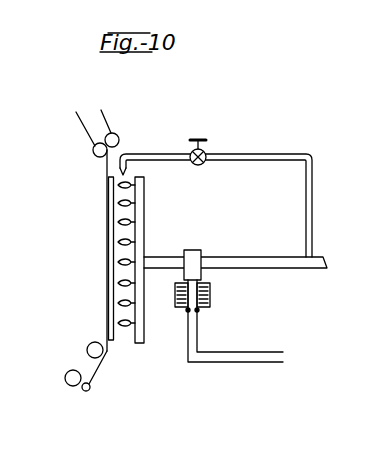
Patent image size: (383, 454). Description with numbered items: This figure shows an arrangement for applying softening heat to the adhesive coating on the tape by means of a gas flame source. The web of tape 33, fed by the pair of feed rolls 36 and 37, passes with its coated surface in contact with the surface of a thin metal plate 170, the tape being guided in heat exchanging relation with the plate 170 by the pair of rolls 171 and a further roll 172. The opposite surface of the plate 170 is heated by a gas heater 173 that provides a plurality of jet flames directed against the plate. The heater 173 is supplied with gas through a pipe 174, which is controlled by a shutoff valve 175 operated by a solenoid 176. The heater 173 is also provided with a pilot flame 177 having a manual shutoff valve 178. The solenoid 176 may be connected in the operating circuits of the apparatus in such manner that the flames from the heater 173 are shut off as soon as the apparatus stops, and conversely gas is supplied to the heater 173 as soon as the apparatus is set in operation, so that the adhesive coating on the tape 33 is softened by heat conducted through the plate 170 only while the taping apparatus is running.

The web of tape 33 is at (105, 168).
The feed roll 36 is at (70, 386).
The feed roll 37 is at (91, 388).
The thin metal plate 170 is at (109, 266).
The pair of rolls 171 is at (98, 138).
The further roll 172 is at (92, 343).
The gas heater 173 is at (146, 216).
The pipe 174 is at (262, 268).
The shutoff valve 175 is at (190, 253).
The solenoid 176 is at (211, 298).
The pilot flame 177 is at (128, 171).
The manual shutoff valve 178 is at (205, 152).